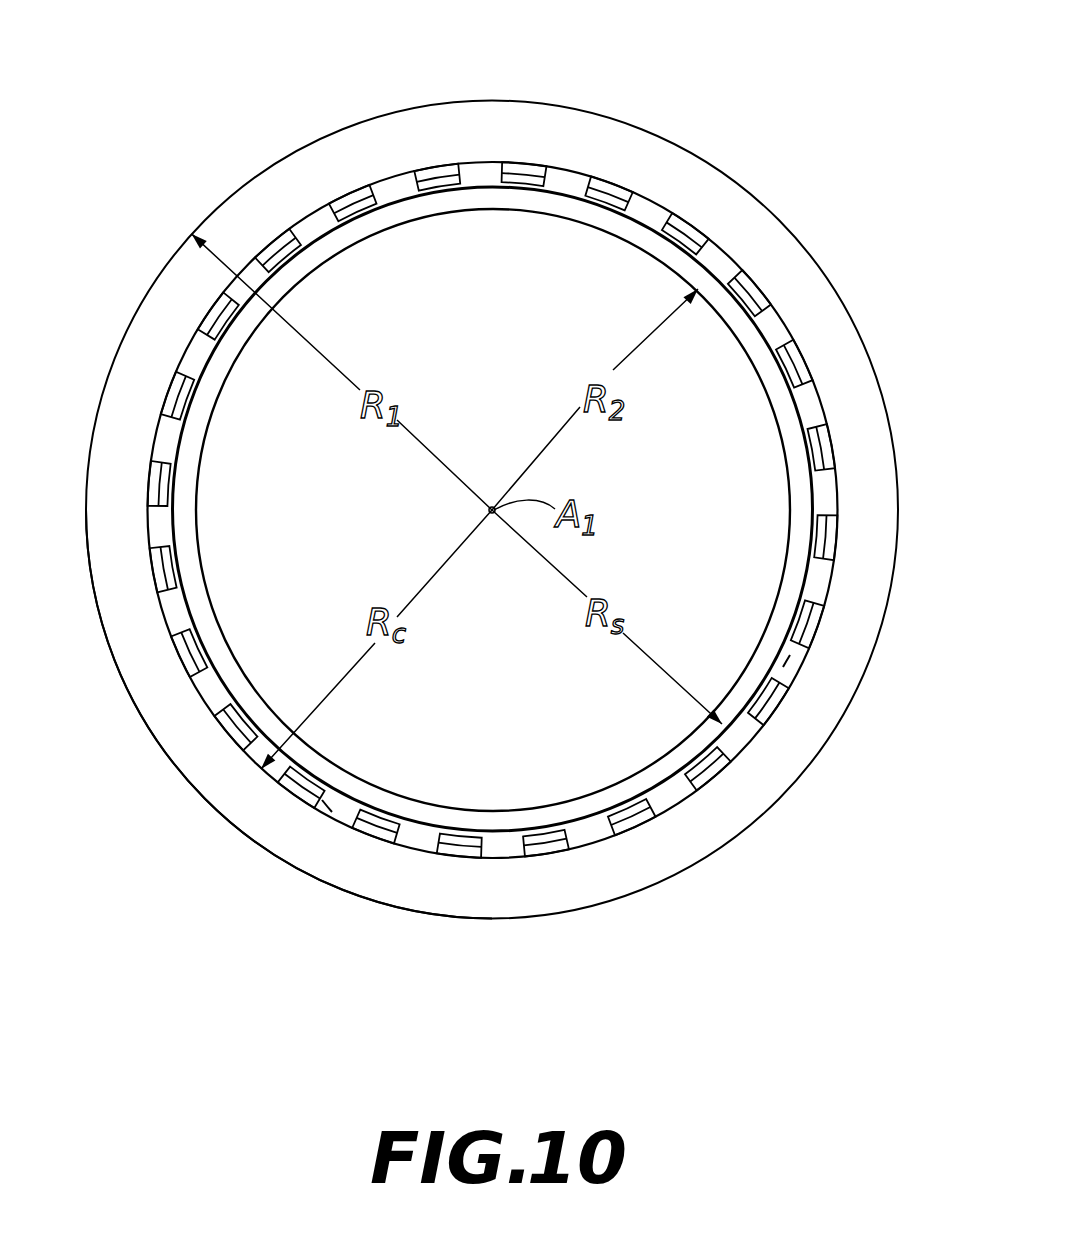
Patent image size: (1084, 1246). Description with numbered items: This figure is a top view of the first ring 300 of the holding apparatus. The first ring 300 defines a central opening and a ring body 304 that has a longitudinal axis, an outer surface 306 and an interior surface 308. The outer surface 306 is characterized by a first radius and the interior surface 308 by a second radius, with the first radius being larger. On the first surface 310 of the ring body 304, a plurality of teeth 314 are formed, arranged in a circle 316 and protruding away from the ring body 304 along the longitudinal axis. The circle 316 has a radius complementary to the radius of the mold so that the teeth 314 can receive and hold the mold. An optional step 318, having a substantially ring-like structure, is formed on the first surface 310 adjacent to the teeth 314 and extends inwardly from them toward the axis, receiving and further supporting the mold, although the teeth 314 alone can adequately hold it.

The first ring 300 is at (187, 65).
The ring body 304 is at (532, 112).
The outer surface 306 is at (715, 163).
The interior surface 308 is at (197, 478).
The first surface 310 is at (700, 830).
The plurality of teeth 314 is at (605, 198).
The circle 316 is at (332, 812).
The step 318 is at (783, 667).